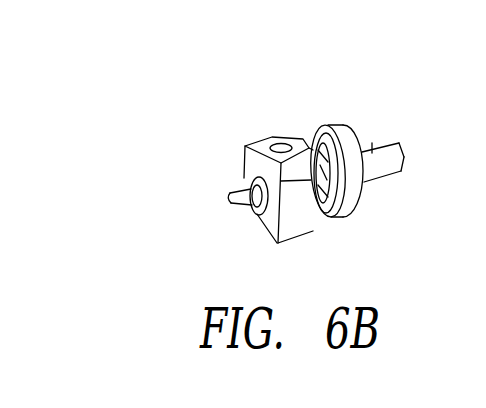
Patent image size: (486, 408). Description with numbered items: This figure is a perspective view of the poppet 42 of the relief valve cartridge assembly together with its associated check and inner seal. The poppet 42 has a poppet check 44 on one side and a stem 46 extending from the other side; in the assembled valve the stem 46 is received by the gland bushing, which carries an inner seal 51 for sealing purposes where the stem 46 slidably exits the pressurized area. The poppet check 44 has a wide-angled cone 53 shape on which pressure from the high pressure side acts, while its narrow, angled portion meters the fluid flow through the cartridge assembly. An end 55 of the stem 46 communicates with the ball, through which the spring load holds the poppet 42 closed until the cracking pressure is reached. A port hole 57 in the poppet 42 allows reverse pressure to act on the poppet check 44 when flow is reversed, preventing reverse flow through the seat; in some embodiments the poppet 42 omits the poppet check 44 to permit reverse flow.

The poppet 42 is at (253, 138).
The poppet check 44 is at (245, 214).
The stem 46 is at (372, 155).
The inner seal 51 is at (358, 204).
The wide-angled cone 53 is at (226, 181).
The end 55 is at (406, 150).
The port hole 57 is at (282, 132).